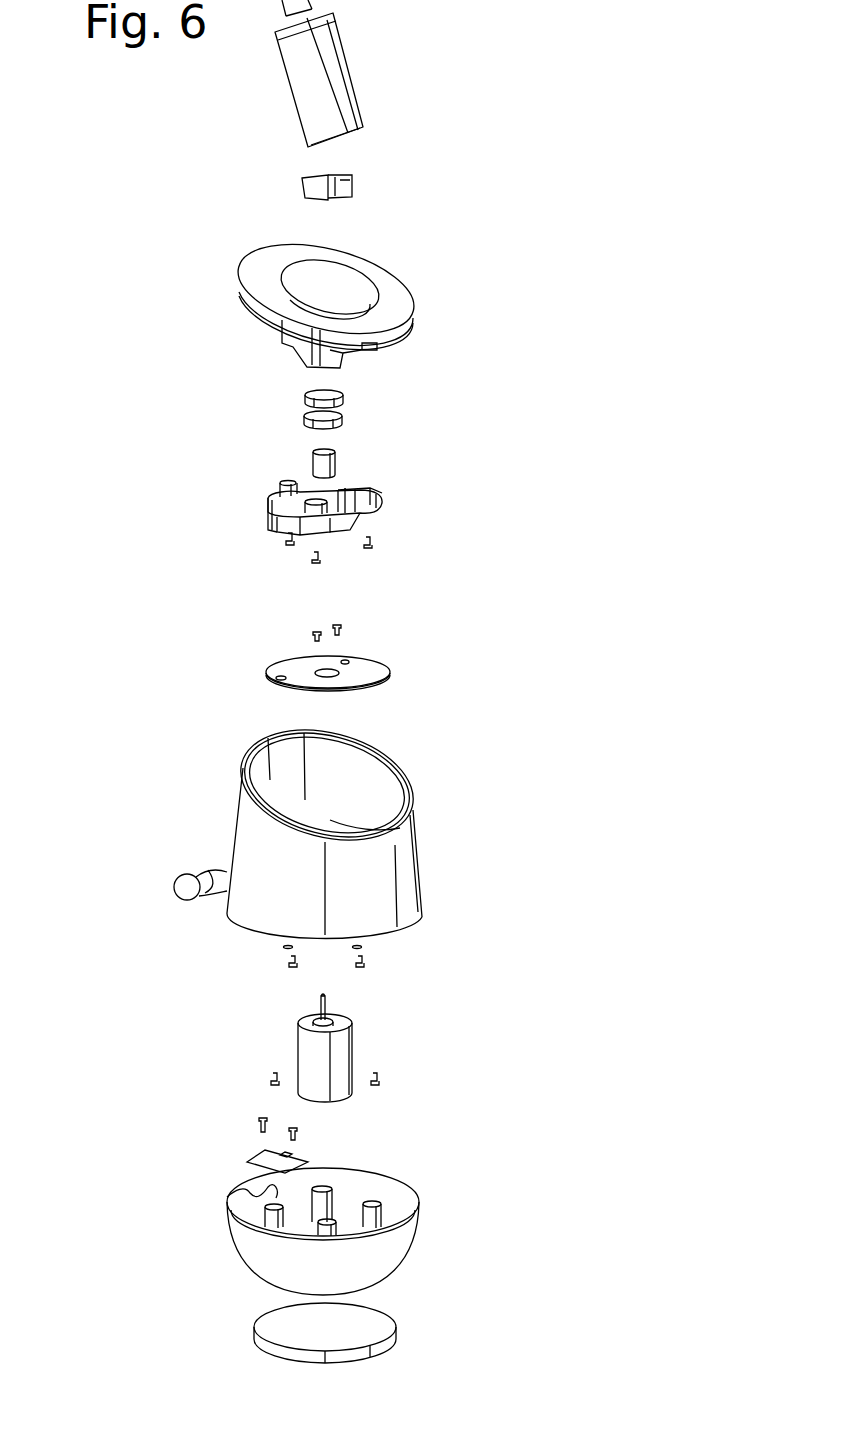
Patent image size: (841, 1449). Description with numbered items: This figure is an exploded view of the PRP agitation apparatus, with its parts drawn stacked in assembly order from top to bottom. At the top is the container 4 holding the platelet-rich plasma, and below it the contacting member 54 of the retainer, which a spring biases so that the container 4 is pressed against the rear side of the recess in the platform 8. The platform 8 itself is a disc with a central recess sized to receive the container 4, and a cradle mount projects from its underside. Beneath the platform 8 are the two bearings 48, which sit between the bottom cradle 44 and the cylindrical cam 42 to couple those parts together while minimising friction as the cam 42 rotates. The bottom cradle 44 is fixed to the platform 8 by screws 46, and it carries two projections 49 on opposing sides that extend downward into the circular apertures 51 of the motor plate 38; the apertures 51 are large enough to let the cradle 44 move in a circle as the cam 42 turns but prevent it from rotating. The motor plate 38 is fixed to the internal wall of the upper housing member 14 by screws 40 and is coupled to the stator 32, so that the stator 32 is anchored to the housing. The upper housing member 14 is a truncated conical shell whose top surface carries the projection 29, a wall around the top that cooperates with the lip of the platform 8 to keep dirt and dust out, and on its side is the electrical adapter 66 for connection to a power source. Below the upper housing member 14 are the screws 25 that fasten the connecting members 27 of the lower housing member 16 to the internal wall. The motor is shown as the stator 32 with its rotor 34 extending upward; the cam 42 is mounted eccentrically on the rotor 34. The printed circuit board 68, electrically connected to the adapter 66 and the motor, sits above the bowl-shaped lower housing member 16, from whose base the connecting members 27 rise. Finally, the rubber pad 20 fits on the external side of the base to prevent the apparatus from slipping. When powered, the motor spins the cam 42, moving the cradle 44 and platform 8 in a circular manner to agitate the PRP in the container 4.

The container 4 is at (338, 75).
The contacting member 54 is at (352, 187).
The platform 8 is at (260, 263).
The bearings 48 is at (307, 400).
The cam 42 is at (335, 463).
The bottom cradle 44 is at (230, 520).
The projections 49 is at (280, 532).
The screws 46 is at (373, 542).
The screws 40 is at (340, 623).
The circular apertures 51 is at (280, 677).
The motor plate 38 is at (307, 655).
The projection 29 is at (252, 742).
The upper housing member 14 is at (255, 811).
The electrical adapter 66 is at (187, 873).
The screws 25 is at (363, 962).
The rotor 34 is at (328, 1005).
The stator 32 is at (396, 1042).
The printed circuit board 68 is at (260, 1153).
The connecting members 27 is at (377, 1202).
The lower housing member 16 is at (297, 1223).
The rubber pad 20 is at (385, 1335).